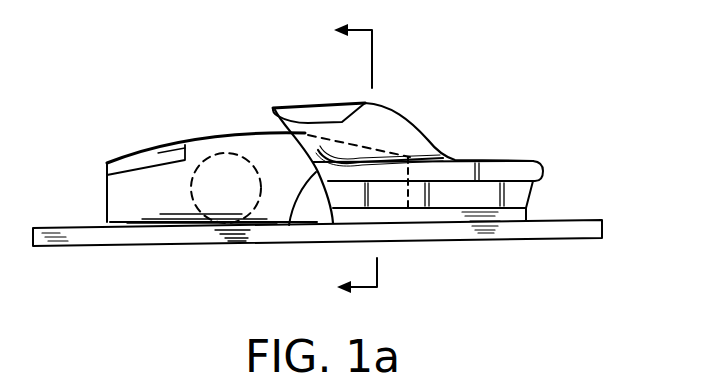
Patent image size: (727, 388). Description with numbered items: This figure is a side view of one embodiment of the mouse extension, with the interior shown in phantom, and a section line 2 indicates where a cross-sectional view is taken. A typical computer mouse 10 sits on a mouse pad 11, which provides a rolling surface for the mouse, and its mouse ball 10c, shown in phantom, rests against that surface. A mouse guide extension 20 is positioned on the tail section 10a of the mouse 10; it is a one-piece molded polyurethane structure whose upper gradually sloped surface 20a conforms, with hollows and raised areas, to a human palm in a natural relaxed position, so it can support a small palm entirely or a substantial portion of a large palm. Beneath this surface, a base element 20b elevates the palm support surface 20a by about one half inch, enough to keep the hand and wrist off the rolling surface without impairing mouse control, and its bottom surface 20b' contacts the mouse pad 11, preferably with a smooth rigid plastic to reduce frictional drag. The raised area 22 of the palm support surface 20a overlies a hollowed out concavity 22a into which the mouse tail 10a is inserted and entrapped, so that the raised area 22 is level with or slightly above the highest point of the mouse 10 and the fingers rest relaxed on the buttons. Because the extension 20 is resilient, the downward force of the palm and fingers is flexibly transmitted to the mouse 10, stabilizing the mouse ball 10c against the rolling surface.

The section line 2- 2 is at (355, 162).
The computer mouse 10 is at (217, 136).
The tail section 10a is at (392, 210).
The mouse ball 10c is at (196, 212).
The mouse pad 11 is at (553, 238).
The mouse guide extension 20 is at (407, 113).
The upper gradually sloped surface 20a is at (421, 130).
The base element 20b is at (467, 167).
The bottom surface 20b' is at (435, 252).
The raised area 22 is at (310, 113).
The hollowed out concavity 22a is at (289, 225).